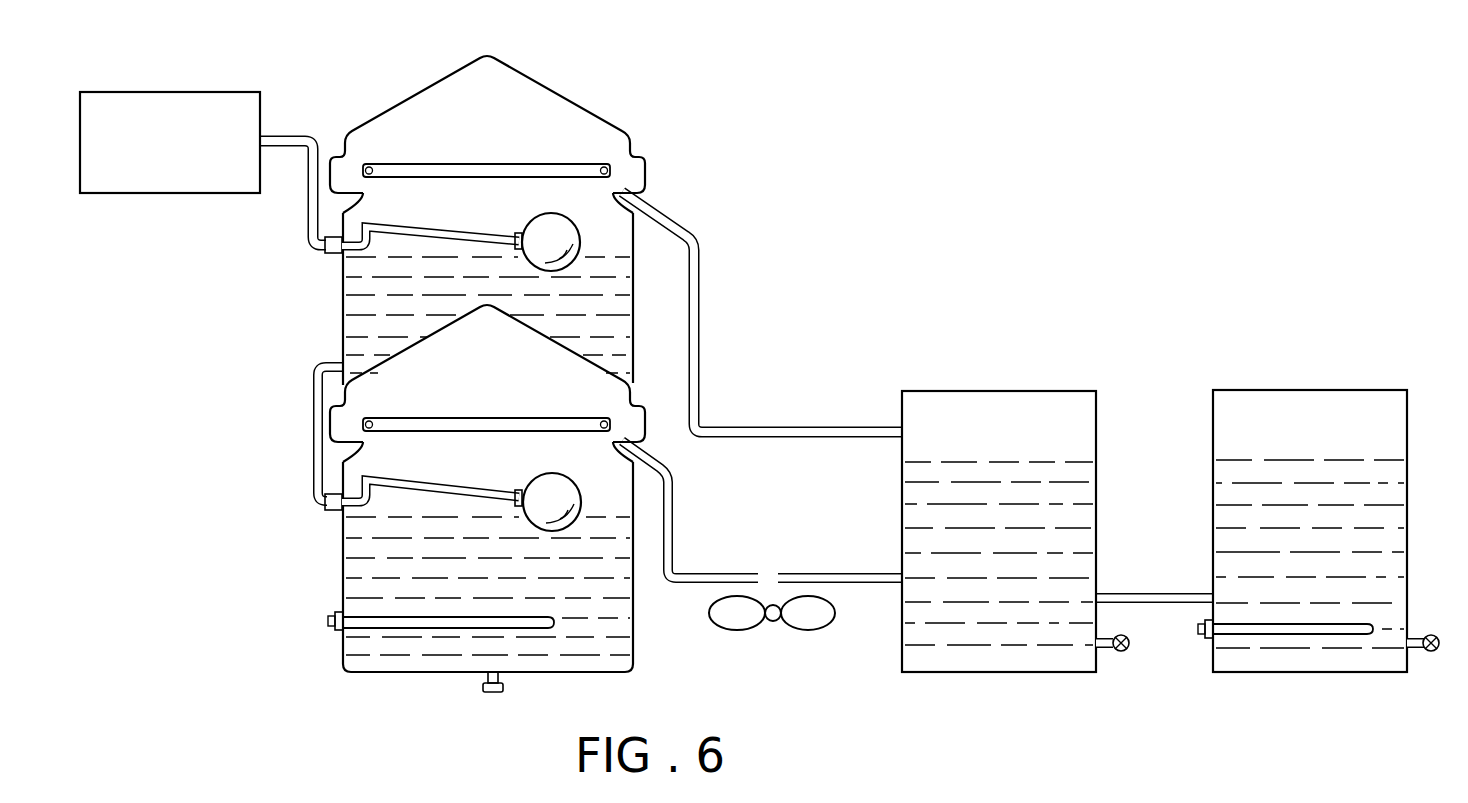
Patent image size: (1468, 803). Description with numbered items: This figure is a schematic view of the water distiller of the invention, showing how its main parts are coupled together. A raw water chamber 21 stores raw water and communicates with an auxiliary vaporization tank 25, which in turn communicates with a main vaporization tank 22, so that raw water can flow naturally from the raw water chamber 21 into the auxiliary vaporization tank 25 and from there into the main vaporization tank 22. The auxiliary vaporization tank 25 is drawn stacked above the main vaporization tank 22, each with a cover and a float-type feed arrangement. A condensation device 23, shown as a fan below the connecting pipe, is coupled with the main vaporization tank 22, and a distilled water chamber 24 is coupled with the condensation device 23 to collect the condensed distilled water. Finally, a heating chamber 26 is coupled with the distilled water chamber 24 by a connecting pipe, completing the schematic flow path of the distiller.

The raw water chamber 21 is at (226, 92).
The main vaporization tank 22 is at (343, 558).
The condensation device 23 is at (773, 634).
The distilled water chamber 24 is at (1043, 390).
The auxiliary vaporization tank 25 is at (557, 88).
The heating chamber 26 is at (1325, 390).